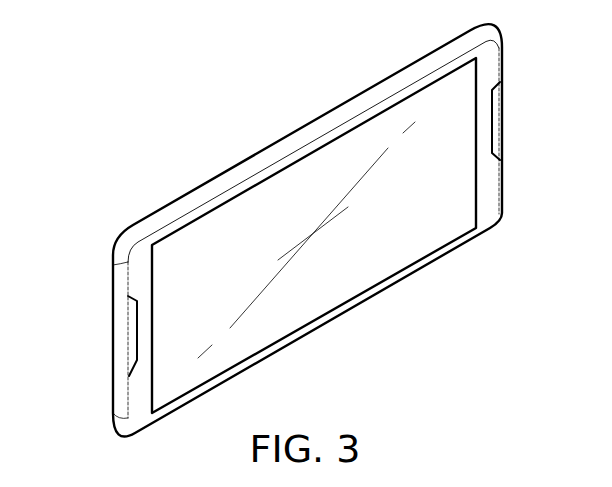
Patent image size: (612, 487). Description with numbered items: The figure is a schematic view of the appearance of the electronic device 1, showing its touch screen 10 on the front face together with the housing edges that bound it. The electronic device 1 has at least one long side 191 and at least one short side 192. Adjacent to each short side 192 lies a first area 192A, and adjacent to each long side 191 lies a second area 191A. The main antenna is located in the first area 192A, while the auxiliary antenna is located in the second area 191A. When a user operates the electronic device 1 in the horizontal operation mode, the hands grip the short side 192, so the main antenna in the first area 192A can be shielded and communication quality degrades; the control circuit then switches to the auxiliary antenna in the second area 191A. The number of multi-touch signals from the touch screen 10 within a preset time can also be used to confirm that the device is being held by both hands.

The electronic device 1 is at (308, 230).
The touch screen 10 is at (315, 163).
The long side 191 is at (206, 186).
The second area 191A is at (258, 178).
The short side 192 is at (120, 347).
The first area 192A is at (137, 386).